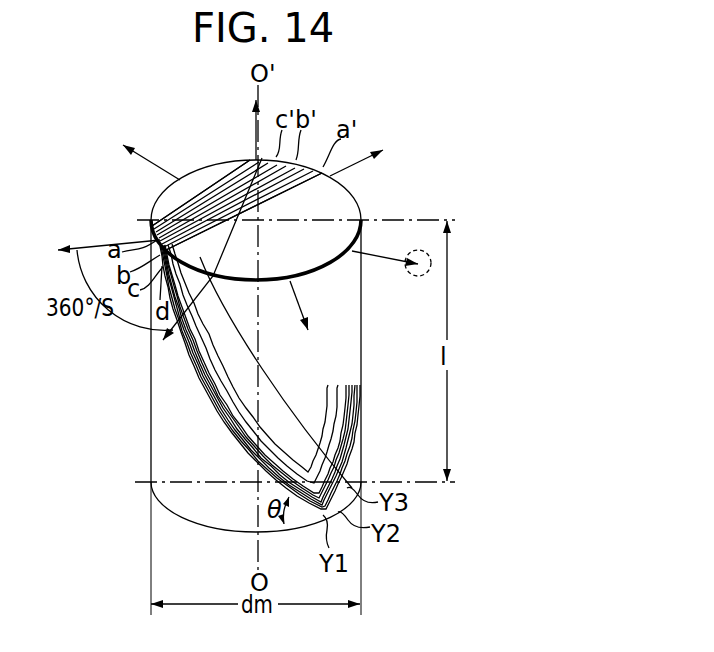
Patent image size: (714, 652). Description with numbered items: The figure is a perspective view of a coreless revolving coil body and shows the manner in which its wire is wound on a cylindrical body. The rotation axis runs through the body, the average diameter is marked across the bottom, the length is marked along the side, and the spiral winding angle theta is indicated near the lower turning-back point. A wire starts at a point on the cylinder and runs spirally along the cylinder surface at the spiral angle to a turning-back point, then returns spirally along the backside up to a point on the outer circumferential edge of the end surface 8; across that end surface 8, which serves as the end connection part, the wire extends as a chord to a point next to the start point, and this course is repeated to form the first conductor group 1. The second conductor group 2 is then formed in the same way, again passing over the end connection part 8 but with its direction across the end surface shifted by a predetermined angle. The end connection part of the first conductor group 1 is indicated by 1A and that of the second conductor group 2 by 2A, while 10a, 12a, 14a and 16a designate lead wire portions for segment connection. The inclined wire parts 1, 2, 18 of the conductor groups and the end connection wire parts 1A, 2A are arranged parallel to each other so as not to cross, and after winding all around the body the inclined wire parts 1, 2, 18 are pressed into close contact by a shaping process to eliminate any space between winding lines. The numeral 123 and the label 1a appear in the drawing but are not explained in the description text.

The end surface 8 is at (343, 198).
The winding band on end face 123 is at (204, 237).
The end connection part of the first conductor group 1A is at (161, 240).
The end connection part of the second conductor group 2A is at (190, 236).
The first conductor group 1 is at (212, 396).
The second conductor group 2 is at (246, 413).
The inclined wire part 18 is at (268, 438).
The lead wire portion 10a is at (205, 265).
The direction of winding start 1a is at (94, 250).
The lead wire portion 16a is at (129, 153).
The lead wire portion 14a is at (384, 156).
The lead wire portion 12a is at (315, 322).